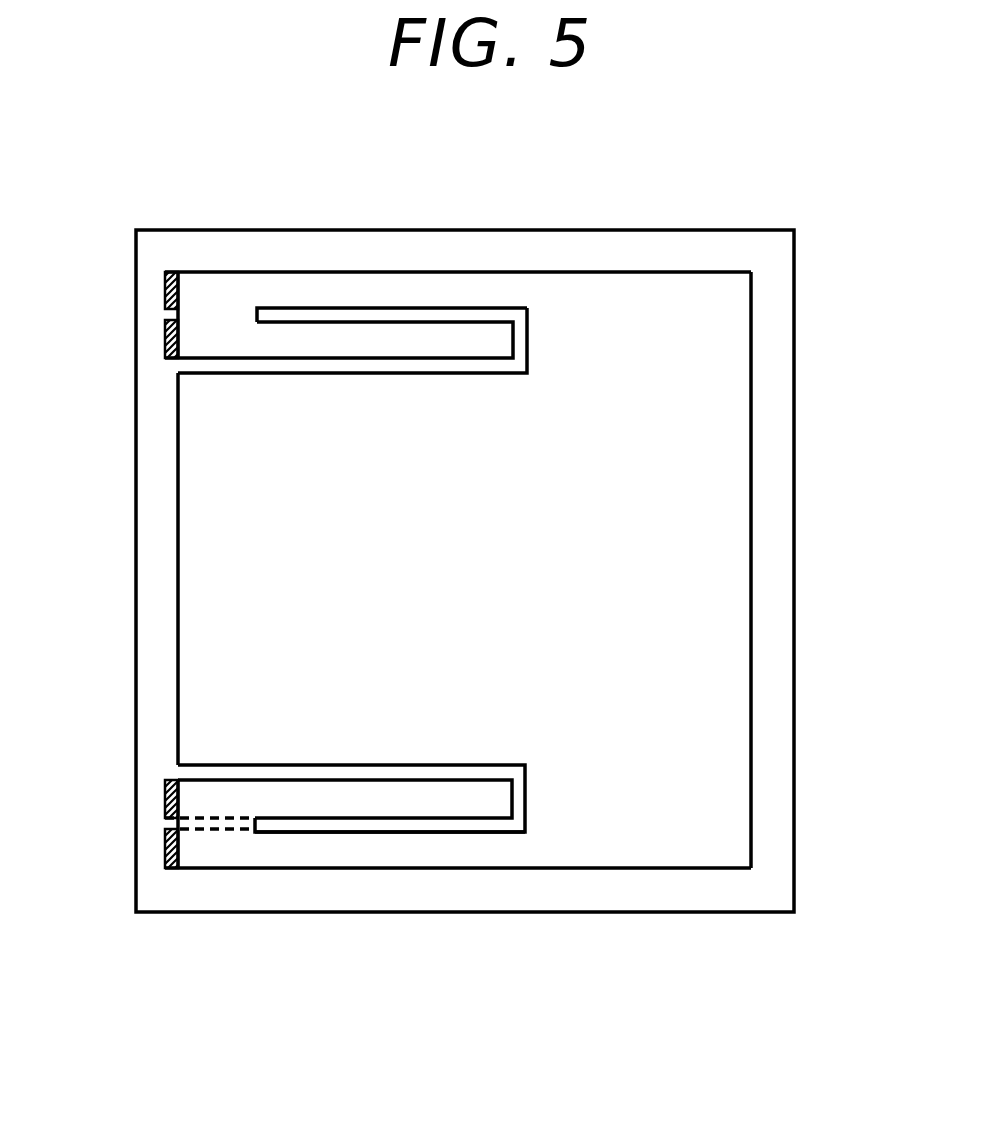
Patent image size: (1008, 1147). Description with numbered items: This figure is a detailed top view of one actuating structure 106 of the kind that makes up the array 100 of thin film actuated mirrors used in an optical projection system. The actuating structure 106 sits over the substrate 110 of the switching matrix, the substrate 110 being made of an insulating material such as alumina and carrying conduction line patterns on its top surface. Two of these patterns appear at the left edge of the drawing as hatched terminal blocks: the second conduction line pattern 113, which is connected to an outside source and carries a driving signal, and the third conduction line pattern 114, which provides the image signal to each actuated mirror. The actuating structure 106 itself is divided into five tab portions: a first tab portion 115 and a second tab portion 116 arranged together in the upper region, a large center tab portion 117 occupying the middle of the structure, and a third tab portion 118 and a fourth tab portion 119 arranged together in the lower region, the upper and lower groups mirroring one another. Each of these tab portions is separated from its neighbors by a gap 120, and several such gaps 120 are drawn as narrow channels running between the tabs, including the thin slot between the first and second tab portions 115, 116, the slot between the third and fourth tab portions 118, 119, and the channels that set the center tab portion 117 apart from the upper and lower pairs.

The array 100 is at (773, 220).
The actuating structure 106 is at (757, 468).
The substrate 110 is at (612, 252).
The second conduction line pattern 113 is at (168, 340).
The third conduction line pattern 114 is at (168, 280).
The first tab portion 115 is at (318, 298).
The second tab portion 116 is at (470, 345).
The center tab portion 117 is at (352, 563).
The third tab portion 118 is at (287, 798).
The fourth tab portion 119 is at (450, 853).
The gap 120 is at (432, 317).